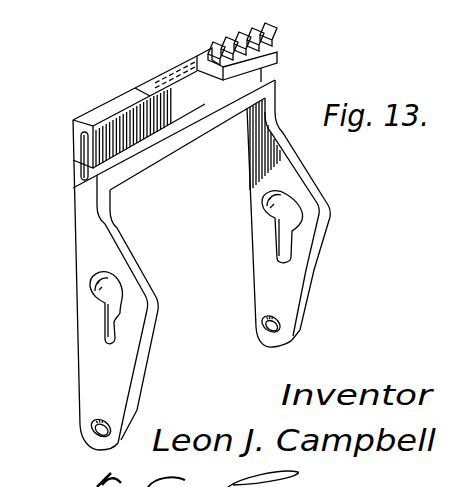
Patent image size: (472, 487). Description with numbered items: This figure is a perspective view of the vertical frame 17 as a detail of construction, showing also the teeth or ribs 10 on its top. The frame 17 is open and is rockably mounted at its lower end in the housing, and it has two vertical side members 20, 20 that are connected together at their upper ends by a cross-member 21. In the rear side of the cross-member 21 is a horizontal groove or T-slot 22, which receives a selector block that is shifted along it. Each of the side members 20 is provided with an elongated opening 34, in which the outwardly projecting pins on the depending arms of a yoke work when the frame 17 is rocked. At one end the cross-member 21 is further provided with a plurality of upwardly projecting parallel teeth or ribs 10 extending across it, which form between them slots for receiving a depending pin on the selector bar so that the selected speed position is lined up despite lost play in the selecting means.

The comb teeth 10 is at (224, 47).
The horizontal groove or T-slot 22 is at (268, 67).
The cross-member 21 is at (73, 163).
The vertical frame 17 is at (72, 265).
The vertical side members 20 is at (85, 372).
The elongated openings 34 is at (123, 298).